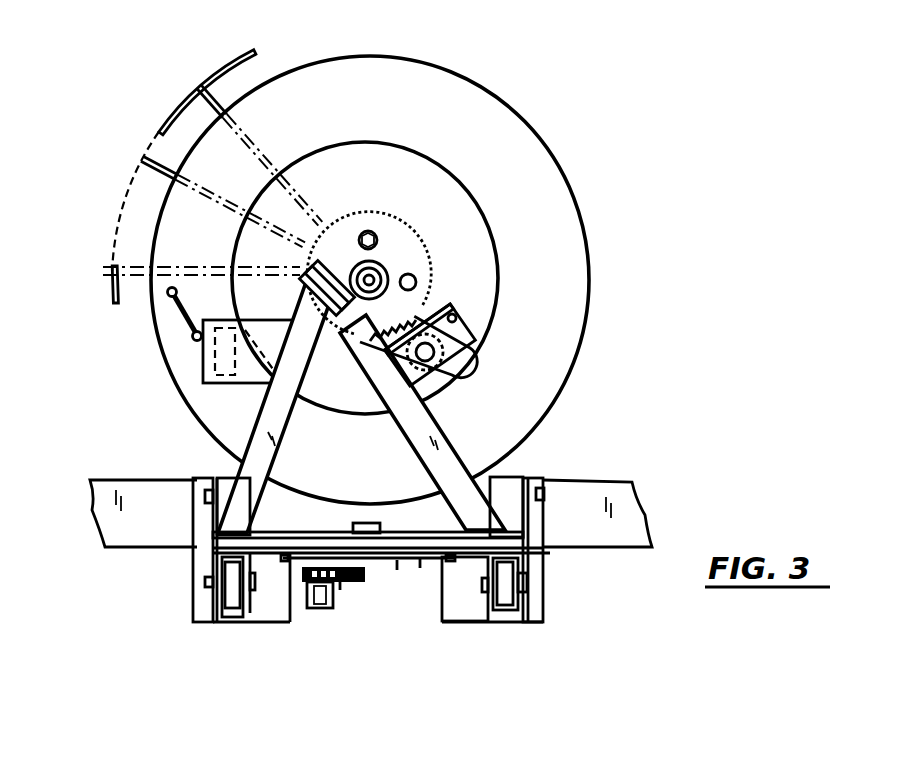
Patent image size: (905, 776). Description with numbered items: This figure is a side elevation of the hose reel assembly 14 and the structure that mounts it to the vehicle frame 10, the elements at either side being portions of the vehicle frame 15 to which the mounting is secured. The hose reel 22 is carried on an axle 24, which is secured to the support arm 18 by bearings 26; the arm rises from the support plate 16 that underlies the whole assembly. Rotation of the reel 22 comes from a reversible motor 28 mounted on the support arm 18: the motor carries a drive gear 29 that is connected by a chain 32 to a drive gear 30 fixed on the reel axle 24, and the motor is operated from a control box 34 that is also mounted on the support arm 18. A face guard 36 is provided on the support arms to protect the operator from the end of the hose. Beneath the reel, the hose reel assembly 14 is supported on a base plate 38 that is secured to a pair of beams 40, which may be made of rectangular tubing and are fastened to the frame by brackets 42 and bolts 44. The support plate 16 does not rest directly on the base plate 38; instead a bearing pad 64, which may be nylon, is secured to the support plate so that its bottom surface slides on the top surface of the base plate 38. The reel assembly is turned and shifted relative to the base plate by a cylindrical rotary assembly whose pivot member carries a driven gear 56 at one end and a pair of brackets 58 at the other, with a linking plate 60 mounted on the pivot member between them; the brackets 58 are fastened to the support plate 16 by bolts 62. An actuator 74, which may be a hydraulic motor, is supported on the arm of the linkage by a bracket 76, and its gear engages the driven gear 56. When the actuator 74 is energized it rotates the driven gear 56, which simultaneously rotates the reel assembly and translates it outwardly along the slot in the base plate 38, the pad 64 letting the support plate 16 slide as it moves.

The frame 10 is at (552, 567).
The hose reel assembly 14 is at (240, 442).
The tank 15 is at (612, 512).
The support plate 16 is at (305, 530).
The support arm 18 is at (455, 427).
The hose reel 22 is at (507, 100).
The axle 24 is at (350, 262).
The bearings 26 is at (390, 267).
The reversible motor 28 is at (467, 340).
The drive gear 29 is at (455, 317).
The drive gear 30 is at (390, 223).
The chain 32 is at (430, 285).
The control box 34 is at (190, 357).
The face guard 36 is at (148, 118).
The base plate 38 is at (212, 550).
The beams 40 is at (227, 620).
The brackets 42 is at (215, 602).
The bolts 44 is at (207, 495).
The driven gear 56 is at (397, 570).
The brackets 58 is at (380, 510).
The linking plate 60 is at (420, 568).
The bolts 62 is at (370, 523).
The bearing pad 64 is at (438, 536).
The actuator 74 is at (327, 608).
The bracket 76 is at (343, 587).